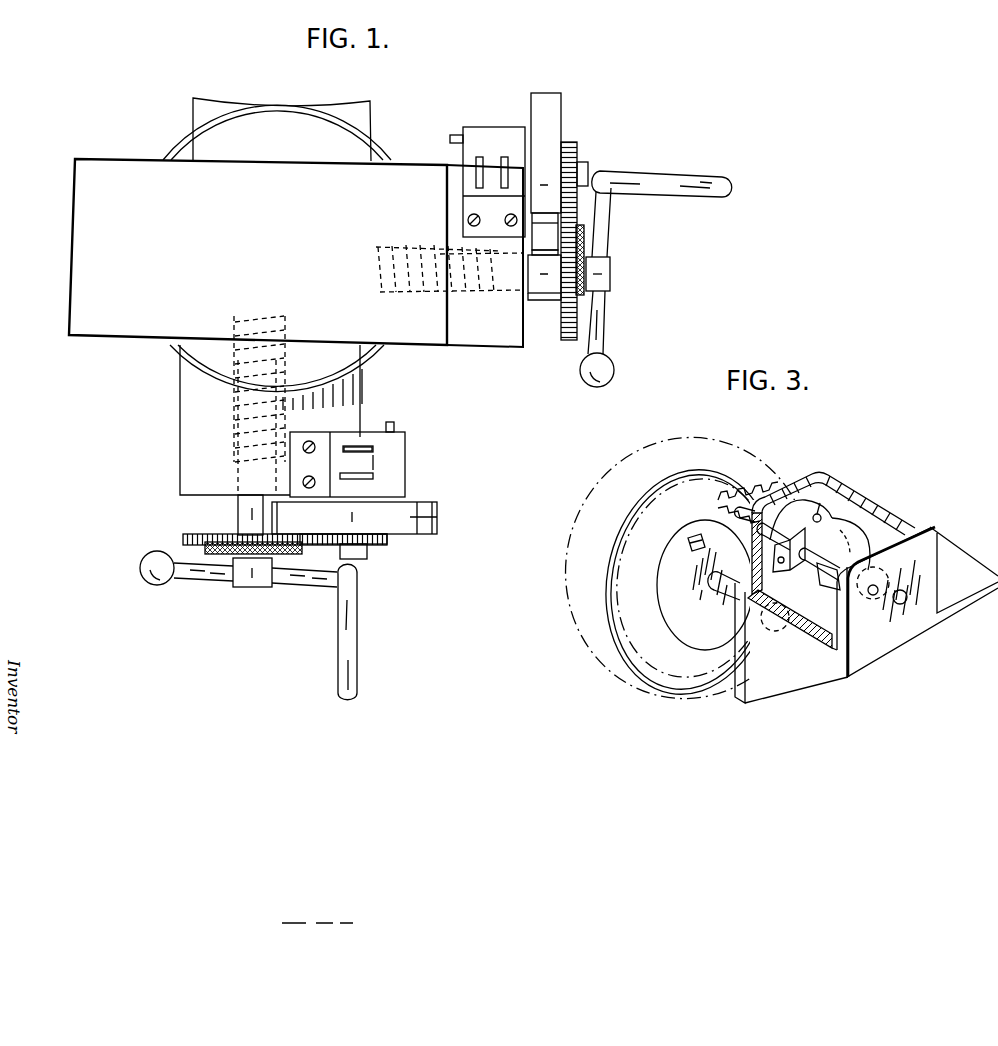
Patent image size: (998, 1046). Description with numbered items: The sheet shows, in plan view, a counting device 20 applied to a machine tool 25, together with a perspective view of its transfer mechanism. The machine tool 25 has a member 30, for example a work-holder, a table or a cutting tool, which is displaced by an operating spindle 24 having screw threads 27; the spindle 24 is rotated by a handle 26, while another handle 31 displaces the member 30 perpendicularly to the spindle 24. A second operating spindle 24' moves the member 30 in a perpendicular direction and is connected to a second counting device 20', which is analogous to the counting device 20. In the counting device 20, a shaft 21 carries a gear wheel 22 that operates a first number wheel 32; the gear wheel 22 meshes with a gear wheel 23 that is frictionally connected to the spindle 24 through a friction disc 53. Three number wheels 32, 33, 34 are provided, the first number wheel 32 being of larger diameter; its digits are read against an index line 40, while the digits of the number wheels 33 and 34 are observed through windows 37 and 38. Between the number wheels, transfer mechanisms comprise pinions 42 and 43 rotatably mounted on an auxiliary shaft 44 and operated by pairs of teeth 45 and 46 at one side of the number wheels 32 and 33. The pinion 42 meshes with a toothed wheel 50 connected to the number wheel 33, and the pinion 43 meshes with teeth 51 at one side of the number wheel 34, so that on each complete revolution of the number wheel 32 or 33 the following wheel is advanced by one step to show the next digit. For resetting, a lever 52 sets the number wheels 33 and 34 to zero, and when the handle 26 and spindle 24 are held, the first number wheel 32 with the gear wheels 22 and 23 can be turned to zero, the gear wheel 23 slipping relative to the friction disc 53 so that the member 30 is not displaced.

In FIG. 1, the counting device 20 is at (368, 501).
In FIG. 3, the counting device 20 is at (835, 574).
In FIG. 1, the second counting device 20' is at (487, 164).
In FIG. 1, the shaft 21 is at (358, 551).
In FIG. 3, the shaft 21 is at (723, 585).
In FIG. 1, the gear wheel 22 is at (388, 542).
In FIG. 1, the gear wheel 23 is at (200, 538).
In FIG. 1, the operating spindle 24 is at (210, 515).
In FIG. 1, the second operating spindle 24' is at (544, 209).
In FIG. 1, the machine tool 25 is at (383, 138).
In FIG. 1, the handle 26 is at (345, 594).
In FIG. 1, the screw threads 27 is at (232, 421).
In FIG. 1, the member 30 is at (80, 292).
In FIG. 1, the handle 31 is at (655, 180).
In FIG. 1, the first number wheel 32 is at (412, 523).
In FIG. 3, the first number wheel 32 is at (637, 502).
In FIG. 1, the number wheel 33 is at (373, 477).
In FIG. 3, the number wheel 33 is at (837, 528).
In FIG. 1, the number wheel 34 is at (375, 450).
In FIG. 3, the number wheel 34 is at (883, 547).
In FIG. 1, the window 37 is at (343, 470).
In FIG. 1, the window 38 is at (352, 450).
In FIG. 1, the index line 40 is at (373, 461).
In FIG. 3, the pinion 42 is at (737, 496).
In FIG. 3, the pinion 43 is at (822, 553).
In FIG. 3, the auxiliary shaft 44 is at (805, 567).
In FIG. 3, the pair of teeth 45 is at (692, 538).
In FIG. 3, the pair of teeth 46 is at (817, 515).
In FIG. 3, the toothed wheel 50 is at (765, 490).
In FIG. 3, the teeth 51 is at (818, 575).
In FIG. 1, the lever 52 is at (393, 424).
In FIG. 1, the friction disc 53 is at (205, 548).